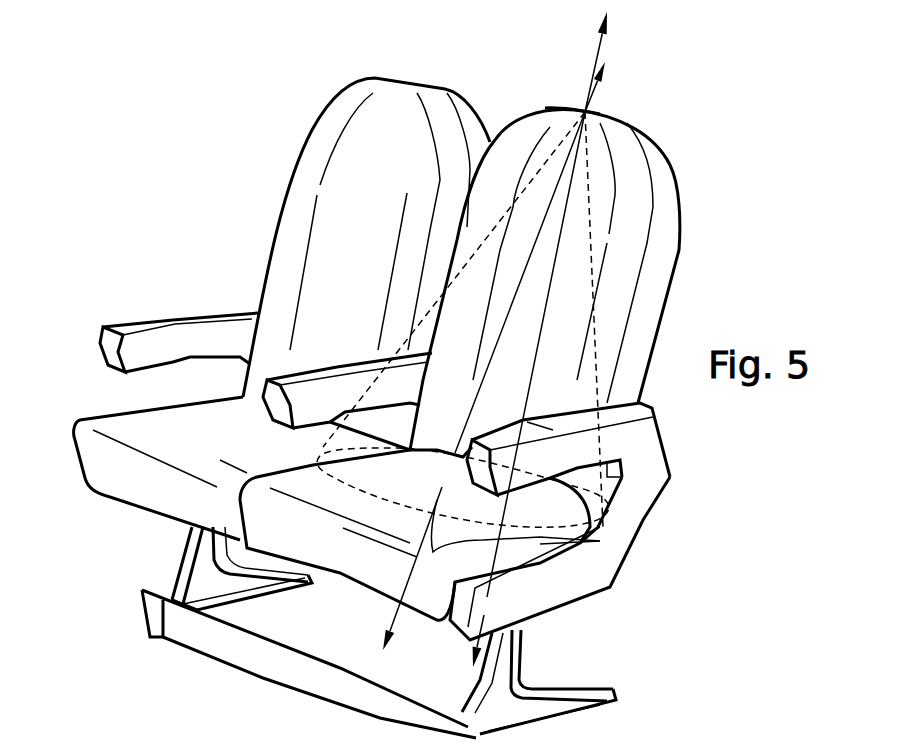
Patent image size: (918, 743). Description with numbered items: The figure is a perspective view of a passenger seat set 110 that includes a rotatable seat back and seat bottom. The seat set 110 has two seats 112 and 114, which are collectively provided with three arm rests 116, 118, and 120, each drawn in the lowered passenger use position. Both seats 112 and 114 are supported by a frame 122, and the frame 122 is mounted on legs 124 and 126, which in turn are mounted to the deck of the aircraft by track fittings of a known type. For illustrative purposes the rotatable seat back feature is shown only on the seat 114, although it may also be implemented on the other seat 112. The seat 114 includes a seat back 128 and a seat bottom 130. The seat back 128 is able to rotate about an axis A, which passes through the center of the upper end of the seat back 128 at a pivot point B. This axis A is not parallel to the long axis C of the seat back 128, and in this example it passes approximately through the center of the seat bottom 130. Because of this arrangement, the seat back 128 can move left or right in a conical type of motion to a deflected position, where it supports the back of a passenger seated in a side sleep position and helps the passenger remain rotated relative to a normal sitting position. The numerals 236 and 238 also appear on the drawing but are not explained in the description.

The seat set 110 is at (209, 132).
The seat 112 is at (362, 76).
The seat 114 is at (670, 200).
The arm rest 116 is at (140, 323).
The arm rest 118 is at (267, 380).
The arm rest 120 is at (643, 433).
The frame 122 is at (597, 575).
The leg 124 is at (523, 670).
The leg 126 is at (193, 570).
The seat back 128 is at (647, 317).
The seat bottom 130 is at (600, 540).
The seat cushion 236 is at (365, 570).
The backrest top 238 is at (655, 136).
The axis A is at (592, 100).
The pivot point B is at (582, 110).
The long axis C is at (600, 51).